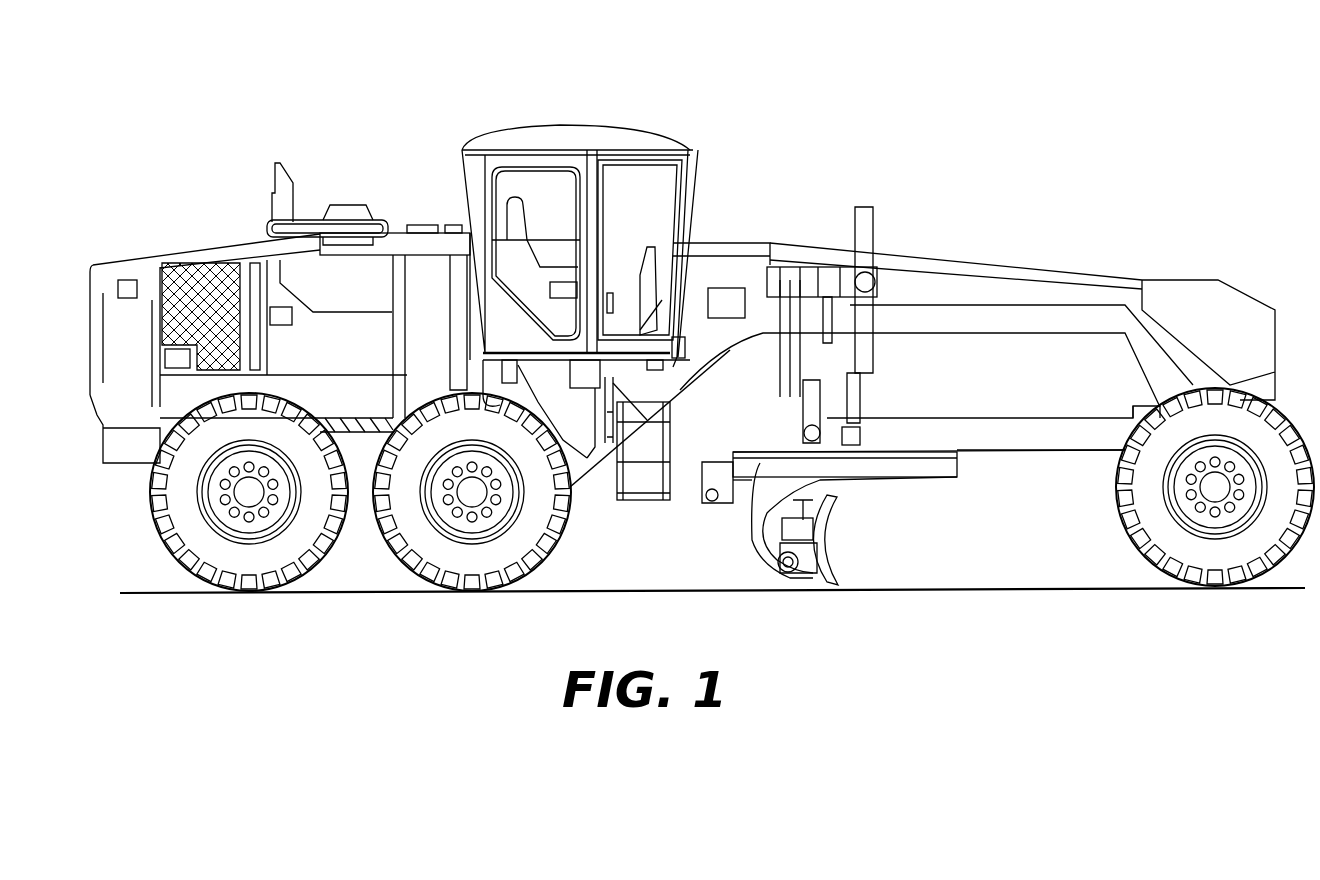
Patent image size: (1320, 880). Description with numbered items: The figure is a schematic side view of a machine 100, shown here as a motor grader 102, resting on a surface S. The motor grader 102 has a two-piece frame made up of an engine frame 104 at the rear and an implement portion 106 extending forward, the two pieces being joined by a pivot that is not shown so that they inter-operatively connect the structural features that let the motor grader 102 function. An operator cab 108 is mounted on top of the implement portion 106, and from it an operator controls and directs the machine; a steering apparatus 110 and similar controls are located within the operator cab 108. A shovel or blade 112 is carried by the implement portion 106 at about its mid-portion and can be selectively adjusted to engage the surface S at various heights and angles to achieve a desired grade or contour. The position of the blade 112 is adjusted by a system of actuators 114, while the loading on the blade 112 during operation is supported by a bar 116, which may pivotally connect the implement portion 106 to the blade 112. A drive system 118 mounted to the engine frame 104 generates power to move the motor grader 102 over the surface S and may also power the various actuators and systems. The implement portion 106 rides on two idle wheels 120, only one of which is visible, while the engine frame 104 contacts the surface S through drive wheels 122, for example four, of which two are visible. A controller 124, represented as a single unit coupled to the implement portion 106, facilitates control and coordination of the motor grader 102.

The machine 100 is at (1043, 67).
The motor grader 102 is at (215, 246).
The engine frame 104 is at (130, 455).
The implement portion 106 is at (1190, 290).
The operator cab 108 is at (495, 130).
The steering apparatus 110 is at (650, 258).
The blade 112 is at (822, 540).
The actuators 114 is at (785, 392).
The bar 116 is at (1030, 430).
The drive system 118 is at (175, 278).
The idle wheels 120 is at (1185, 540).
The drive wheels 122 is at (413, 542).
The controller 124 is at (730, 300).
The surface S is at (140, 592).